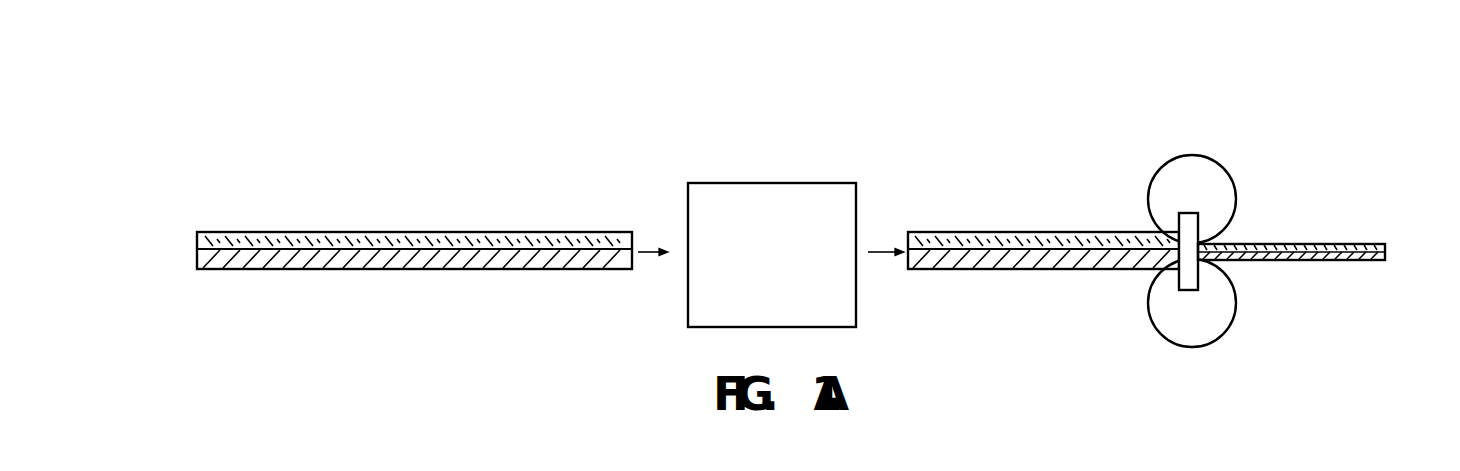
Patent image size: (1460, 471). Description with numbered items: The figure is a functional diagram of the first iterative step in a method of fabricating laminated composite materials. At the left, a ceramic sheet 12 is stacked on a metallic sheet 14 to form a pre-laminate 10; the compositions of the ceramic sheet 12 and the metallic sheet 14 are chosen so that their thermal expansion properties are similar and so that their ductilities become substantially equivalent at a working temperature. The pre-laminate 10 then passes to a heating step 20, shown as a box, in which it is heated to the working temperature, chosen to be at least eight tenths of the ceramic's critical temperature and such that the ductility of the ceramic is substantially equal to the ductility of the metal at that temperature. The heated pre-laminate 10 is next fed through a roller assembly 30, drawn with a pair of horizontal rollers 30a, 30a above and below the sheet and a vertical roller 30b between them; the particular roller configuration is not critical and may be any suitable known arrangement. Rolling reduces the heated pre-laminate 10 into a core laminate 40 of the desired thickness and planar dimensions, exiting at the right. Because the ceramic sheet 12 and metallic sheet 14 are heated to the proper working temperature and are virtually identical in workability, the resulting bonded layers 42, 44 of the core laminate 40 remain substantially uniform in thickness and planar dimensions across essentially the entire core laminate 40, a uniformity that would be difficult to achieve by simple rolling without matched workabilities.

The pre-laminate 10 is at (659, 236).
The ceramic sheet 12 is at (240, 240).
The metallic sheet 14 is at (245, 270).
The heating step 20 is at (778, 183).
The roller assembly 30 is at (1232, 191).
The horizontal rollers 30a is at (1218, 172).
The vertical roller 30b is at (1242, 240).
The core laminate 40 is at (1316, 260).
The core laminate bonded layer 42 is at (1358, 244).
The core laminate bonded layer 44 is at (1390, 252).